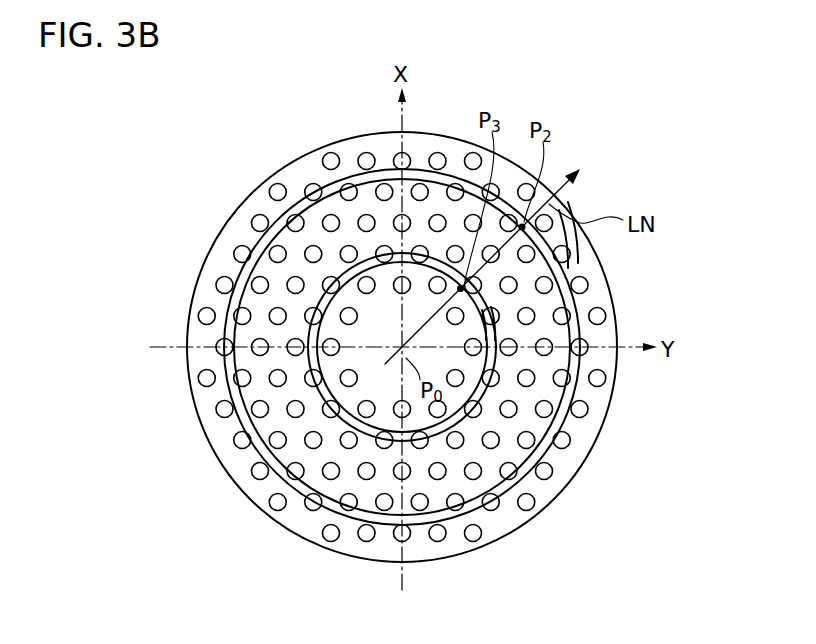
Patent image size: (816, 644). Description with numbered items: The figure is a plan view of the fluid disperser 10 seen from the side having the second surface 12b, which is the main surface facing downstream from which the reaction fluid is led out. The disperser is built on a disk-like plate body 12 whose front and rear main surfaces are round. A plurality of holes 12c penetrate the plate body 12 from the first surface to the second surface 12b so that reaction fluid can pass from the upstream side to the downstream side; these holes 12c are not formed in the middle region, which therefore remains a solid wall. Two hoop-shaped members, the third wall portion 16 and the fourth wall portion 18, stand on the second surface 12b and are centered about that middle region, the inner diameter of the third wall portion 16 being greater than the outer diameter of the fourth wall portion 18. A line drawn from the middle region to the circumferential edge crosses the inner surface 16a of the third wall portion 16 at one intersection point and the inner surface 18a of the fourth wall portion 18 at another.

The fluid disperser 10 is at (246, 163).
The plate body 12 is at (222, 227).
The second surface 12b is at (206, 285).
The holes 12c is at (272, 508).
The third wall portion 16 is at (232, 391).
The inner surface 16a is at (551, 268).
The fourth wall portion 18 is at (318, 392).
The inner surface 18a is at (489, 320).